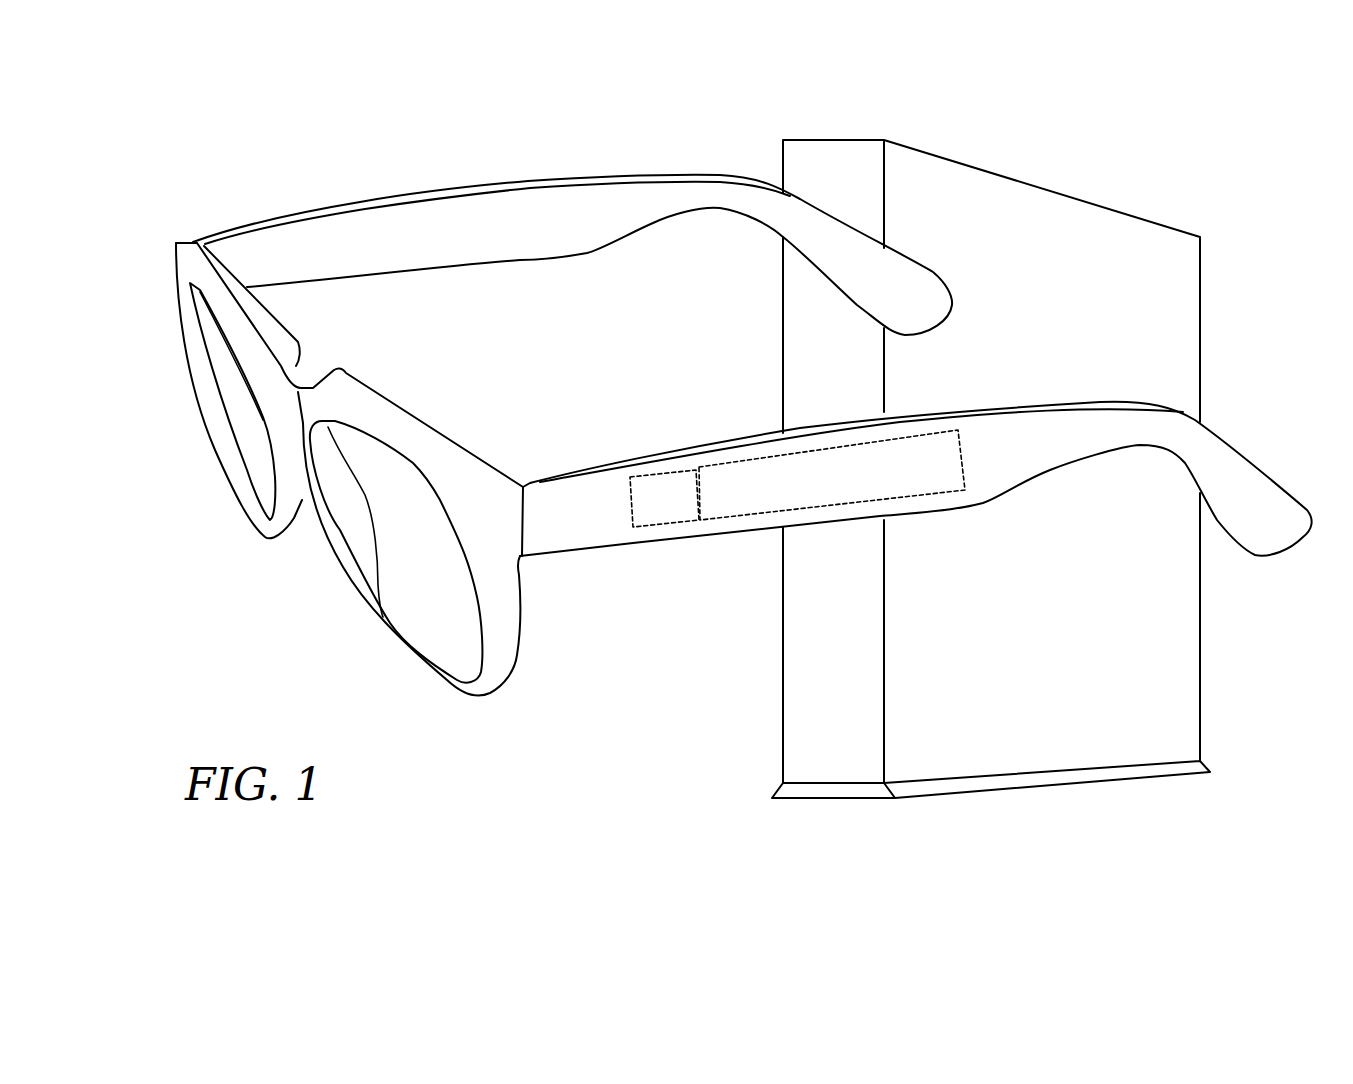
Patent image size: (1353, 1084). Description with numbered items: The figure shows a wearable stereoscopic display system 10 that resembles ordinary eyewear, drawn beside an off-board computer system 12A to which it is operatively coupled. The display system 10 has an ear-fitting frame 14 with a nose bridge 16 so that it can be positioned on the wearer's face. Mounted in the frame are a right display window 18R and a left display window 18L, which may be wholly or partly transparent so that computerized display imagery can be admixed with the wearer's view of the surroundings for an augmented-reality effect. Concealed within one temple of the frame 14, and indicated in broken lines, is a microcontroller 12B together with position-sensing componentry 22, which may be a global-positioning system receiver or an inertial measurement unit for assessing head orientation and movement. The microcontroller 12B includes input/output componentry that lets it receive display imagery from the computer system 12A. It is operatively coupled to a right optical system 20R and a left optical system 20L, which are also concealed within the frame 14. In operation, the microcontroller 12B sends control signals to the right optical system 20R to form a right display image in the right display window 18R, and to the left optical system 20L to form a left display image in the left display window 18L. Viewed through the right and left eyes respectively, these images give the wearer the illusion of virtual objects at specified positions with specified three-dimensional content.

The wearable stereoscopic display system 10 is at (676, 579).
The off-board computer system 12A is at (1070, 703).
The microcontroller 12B is at (847, 487).
The ear-fitting frame 14 is at (528, 181).
The nose bridge 16 is at (283, 407).
The right display window 18R is at (247, 462).
The left display window 18L is at (415, 622).
The right optical system 20R is at (333, 313).
The left optical system 20L is at (420, 372).
The position-sensing componentry 22 is at (676, 511).